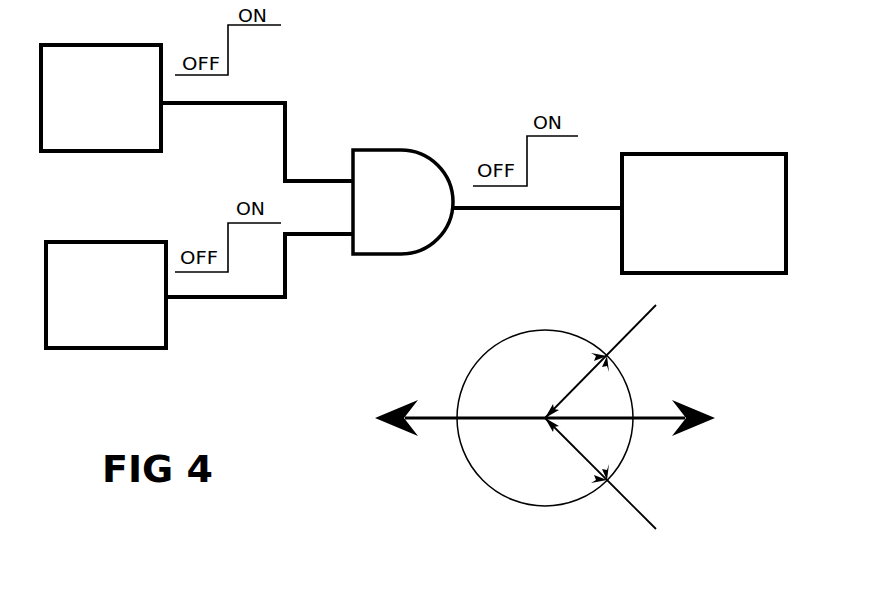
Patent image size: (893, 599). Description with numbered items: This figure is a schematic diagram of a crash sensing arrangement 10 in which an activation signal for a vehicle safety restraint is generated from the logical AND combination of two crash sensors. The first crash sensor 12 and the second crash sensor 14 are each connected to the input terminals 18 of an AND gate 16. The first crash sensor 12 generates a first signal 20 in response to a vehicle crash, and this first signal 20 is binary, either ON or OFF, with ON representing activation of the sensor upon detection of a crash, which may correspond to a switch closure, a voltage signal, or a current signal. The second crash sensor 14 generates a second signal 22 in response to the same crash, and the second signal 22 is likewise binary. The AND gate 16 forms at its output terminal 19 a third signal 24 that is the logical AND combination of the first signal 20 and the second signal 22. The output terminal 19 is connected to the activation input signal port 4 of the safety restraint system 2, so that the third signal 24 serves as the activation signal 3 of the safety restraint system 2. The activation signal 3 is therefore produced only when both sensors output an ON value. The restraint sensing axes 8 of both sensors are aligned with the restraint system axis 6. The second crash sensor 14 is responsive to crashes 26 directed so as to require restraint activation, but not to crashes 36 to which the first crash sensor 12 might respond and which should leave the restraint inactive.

The safety restraint system 2 is at (712, 274).
The activation signal 3 is at (560, 209).
The activation input signal port 4 is at (618, 207).
The restraint system axis 6 is at (390, 430).
The restraint sensing axes 8 is at (712, 427).
The crash sensing system 10 is at (420, 92).
The first crash sensor 12 is at (97, 44).
The second crash sensor 14 is at (94, 241).
The AND gate 16 is at (408, 216).
The input terminals 18 is at (350, 179).
The output terminal 19 is at (457, 211).
The first signal 20 is at (257, 101).
The second signal 22 is at (200, 299).
The third signal 24 is at (505, 209).
The crashes 26 is at (642, 323).
The crashes 36 is at (553, 507).